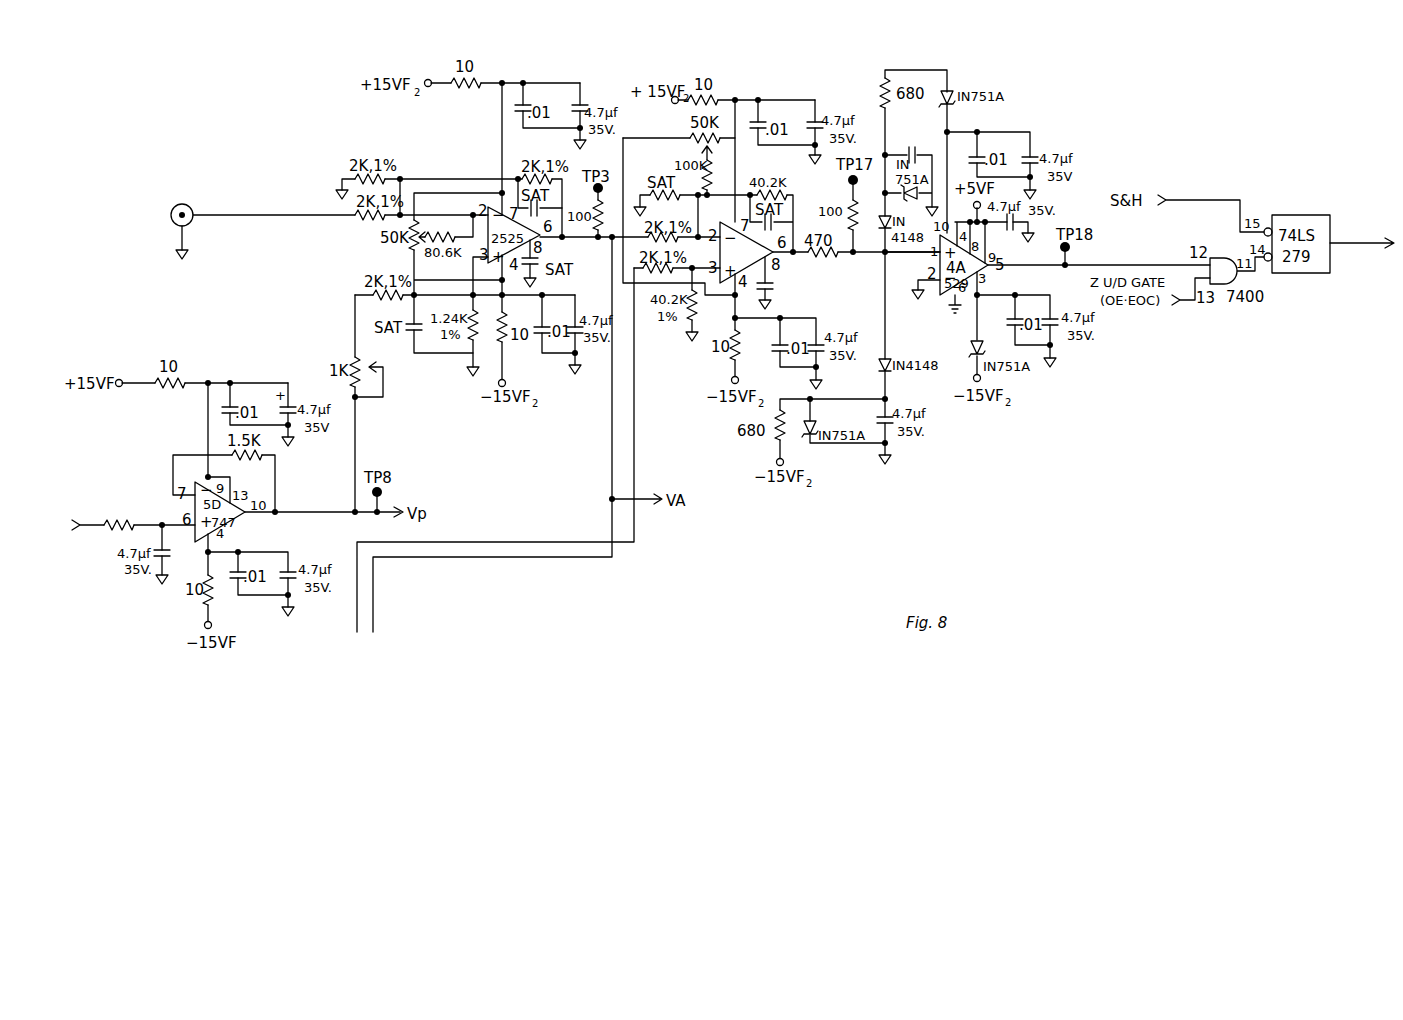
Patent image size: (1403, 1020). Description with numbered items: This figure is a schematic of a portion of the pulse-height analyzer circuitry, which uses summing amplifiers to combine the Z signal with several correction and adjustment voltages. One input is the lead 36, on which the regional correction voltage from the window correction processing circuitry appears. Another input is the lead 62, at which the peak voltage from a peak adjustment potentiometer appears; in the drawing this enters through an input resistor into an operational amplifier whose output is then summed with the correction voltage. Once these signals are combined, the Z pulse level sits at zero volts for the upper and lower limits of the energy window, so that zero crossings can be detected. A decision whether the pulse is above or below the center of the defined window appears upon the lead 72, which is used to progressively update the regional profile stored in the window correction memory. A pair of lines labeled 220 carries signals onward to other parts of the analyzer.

The lead 36 is at (228, 215).
The lead 62 is at (88, 525).
The lead 72 is at (1351, 248).
The bus lines to comparator circuit 220 is at (386, 636).